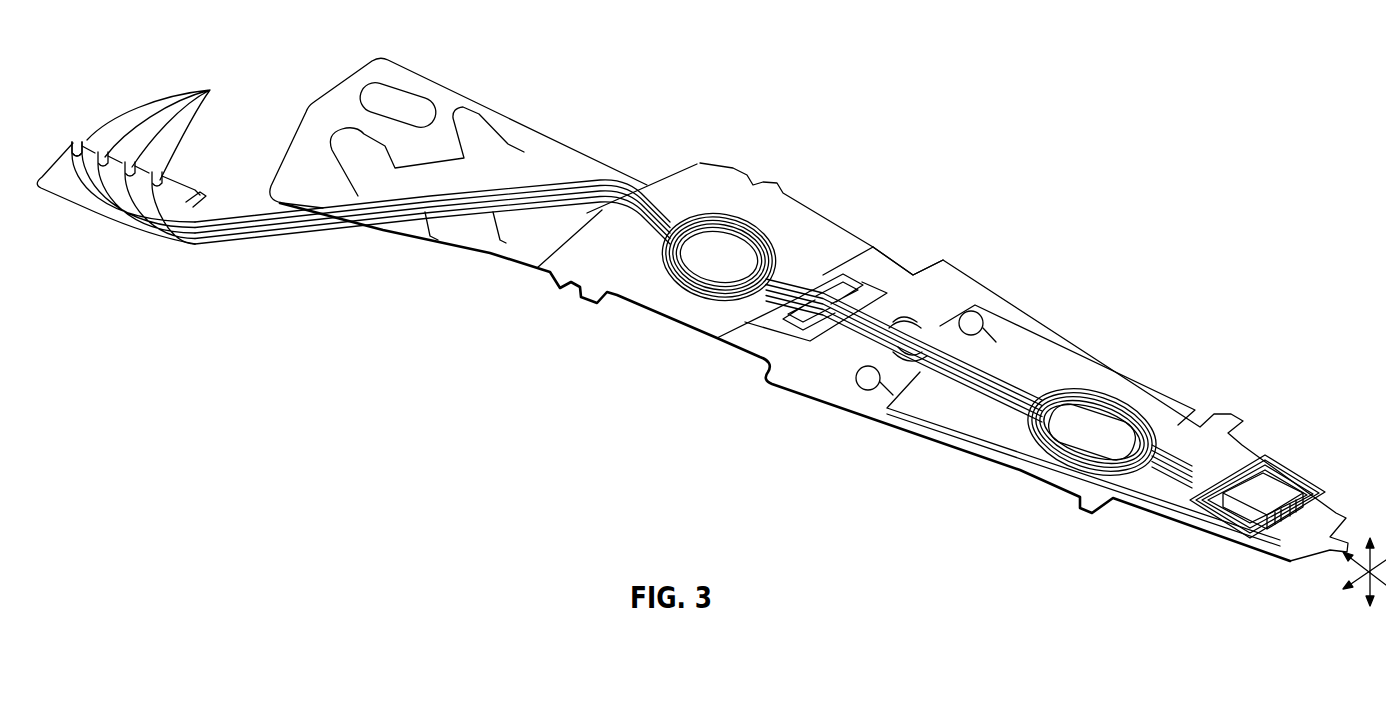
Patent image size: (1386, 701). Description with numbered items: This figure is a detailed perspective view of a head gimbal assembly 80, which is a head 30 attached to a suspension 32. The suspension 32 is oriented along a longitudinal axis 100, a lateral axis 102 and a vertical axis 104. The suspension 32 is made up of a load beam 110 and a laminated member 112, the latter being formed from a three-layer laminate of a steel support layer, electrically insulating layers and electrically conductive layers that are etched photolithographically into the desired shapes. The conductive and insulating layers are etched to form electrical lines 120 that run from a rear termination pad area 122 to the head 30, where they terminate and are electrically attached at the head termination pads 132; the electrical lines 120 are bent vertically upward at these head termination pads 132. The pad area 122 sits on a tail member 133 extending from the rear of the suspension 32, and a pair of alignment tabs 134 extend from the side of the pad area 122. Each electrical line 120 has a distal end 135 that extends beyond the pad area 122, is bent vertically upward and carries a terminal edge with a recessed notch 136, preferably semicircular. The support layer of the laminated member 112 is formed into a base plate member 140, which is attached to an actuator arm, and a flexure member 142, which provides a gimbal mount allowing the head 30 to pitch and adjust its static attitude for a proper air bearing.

The head 30 is at (1252, 490).
The suspension 32 is at (913, 270).
The head gimbal assembly 80 is at (1050, 216).
The longitudinal axis 100 is at (1380, 592).
The lateral axis 102 is at (1366, 571).
The vertical axis 104 is at (1353, 545).
The load beam 110 is at (517, 248).
The laminated member 112 is at (477, 127).
The electrical lines 120 is at (207, 243).
The rear termination pad area 122 is at (80, 207).
The head termination pads 132 is at (1307, 505).
The tail member 133 is at (253, 237).
The alignment tabs 134 is at (73, 148).
The distal ends 135 is at (168, 124).
The recessed notch 136 is at (87, 140).
The base plate member 140 is at (687, 308).
The flexure member 142 is at (1000, 432).